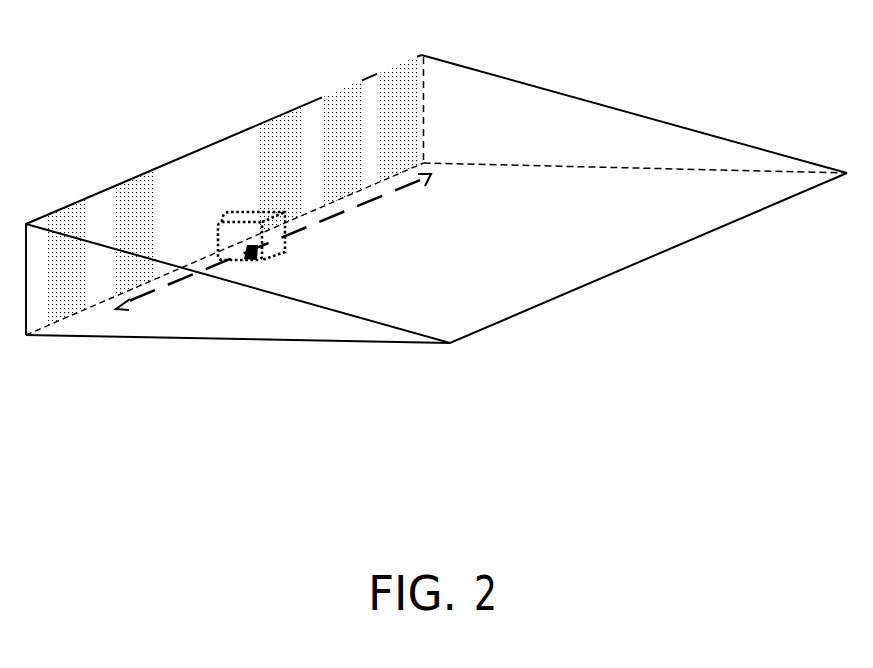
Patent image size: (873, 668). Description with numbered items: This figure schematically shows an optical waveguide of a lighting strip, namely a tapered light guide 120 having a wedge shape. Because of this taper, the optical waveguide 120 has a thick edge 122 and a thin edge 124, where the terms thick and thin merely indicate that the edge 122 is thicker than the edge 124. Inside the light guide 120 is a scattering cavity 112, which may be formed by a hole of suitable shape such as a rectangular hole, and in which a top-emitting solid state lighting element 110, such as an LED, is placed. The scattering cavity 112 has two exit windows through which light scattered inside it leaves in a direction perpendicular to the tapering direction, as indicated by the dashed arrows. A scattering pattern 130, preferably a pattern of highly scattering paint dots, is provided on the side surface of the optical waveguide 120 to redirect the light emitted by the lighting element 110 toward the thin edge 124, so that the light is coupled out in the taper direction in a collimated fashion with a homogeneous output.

The solid state lighting element 110 is at (253, 258).
The scattering cavity 112 is at (288, 235).
The tapered light guide 120 is at (333, 328).
The thick edge 122 is at (200, 172).
The thin edge 124 is at (578, 288).
The scattering pattern 130 is at (282, 140).